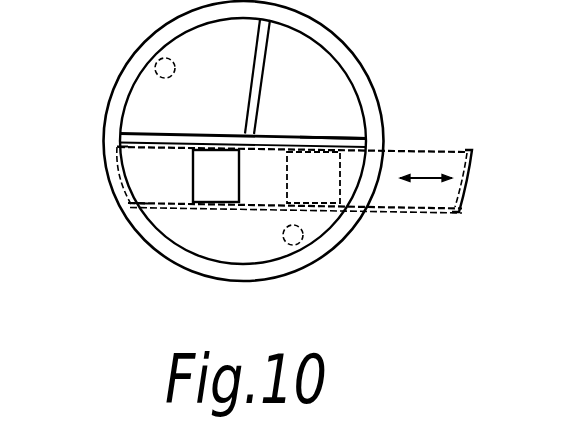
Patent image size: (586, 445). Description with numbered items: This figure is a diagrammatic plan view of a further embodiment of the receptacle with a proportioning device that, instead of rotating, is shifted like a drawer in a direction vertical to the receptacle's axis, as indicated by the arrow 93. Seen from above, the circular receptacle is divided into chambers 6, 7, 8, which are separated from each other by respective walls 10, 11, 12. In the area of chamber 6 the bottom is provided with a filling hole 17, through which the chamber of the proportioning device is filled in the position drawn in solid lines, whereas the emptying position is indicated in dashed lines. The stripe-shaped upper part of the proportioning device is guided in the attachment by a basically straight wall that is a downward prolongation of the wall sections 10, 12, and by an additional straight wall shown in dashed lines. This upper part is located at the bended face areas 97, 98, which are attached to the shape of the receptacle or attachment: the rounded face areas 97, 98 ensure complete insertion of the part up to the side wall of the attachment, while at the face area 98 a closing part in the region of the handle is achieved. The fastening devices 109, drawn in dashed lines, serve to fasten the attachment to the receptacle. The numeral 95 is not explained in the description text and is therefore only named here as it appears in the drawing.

The chamber 6 is at (236, 246).
The chamber 7 is at (310, 98).
The chamber 8 is at (218, 79).
The wall 10 is at (323, 137).
The wall 11 is at (259, 63).
The wall 12 is at (186, 134).
The filling hole 17 is at (222, 188).
The arrow 93 is at (426, 179).
The slider 95 is at (165, 206).
The bended face area 97 is at (124, 188).
The bended face area 98 is at (472, 182).
The fastening devices 109 is at (153, 63).